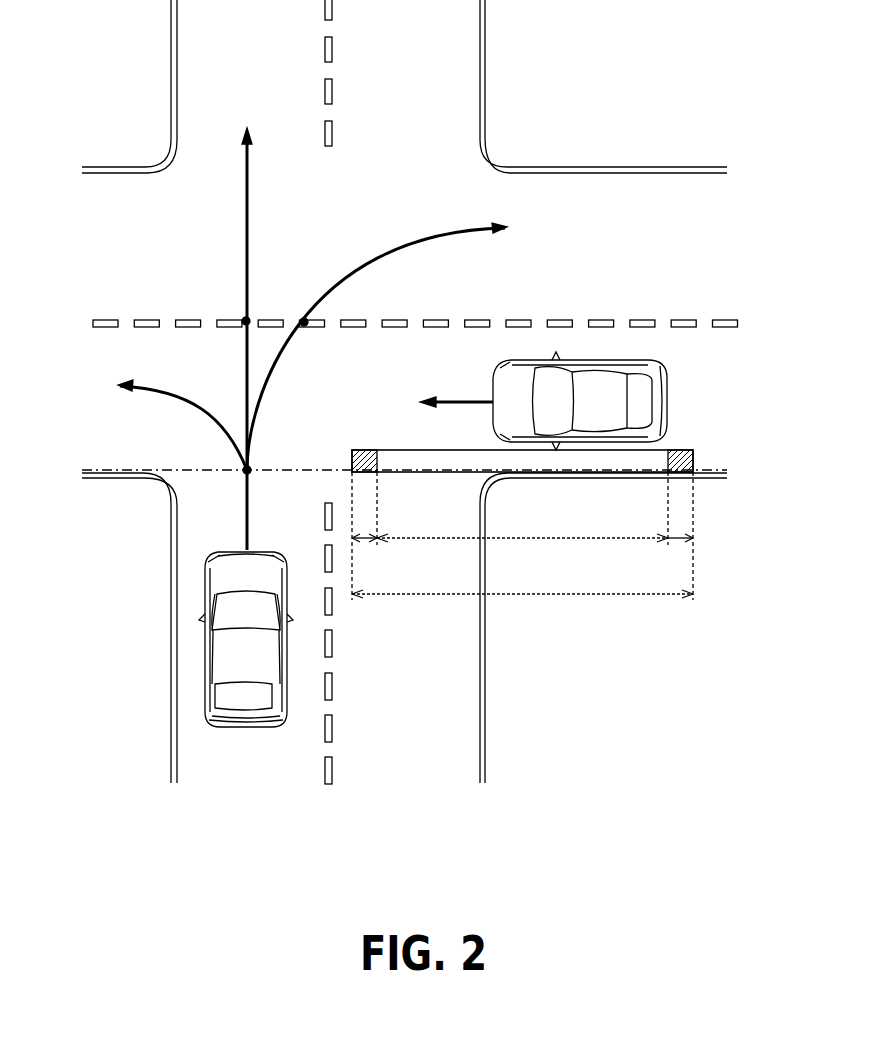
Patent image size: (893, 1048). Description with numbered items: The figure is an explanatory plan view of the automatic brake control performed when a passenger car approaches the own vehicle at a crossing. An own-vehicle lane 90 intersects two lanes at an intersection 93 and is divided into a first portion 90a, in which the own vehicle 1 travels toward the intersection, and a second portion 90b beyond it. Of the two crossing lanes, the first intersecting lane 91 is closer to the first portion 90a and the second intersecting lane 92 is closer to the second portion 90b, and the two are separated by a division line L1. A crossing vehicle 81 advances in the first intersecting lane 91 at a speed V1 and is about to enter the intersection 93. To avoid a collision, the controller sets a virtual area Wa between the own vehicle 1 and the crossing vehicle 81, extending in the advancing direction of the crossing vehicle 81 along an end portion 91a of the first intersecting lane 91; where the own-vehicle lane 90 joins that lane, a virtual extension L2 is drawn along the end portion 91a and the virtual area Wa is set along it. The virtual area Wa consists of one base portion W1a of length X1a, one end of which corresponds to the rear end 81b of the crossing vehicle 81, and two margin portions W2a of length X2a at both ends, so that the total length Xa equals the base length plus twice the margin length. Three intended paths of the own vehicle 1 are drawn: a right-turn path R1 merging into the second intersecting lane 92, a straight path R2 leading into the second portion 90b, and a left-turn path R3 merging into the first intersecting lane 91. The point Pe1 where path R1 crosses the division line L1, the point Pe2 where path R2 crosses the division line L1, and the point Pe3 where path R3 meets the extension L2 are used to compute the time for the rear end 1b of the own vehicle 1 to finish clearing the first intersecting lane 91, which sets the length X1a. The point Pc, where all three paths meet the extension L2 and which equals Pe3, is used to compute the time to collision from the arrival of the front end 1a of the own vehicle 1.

The own vehicle 1 is at (196, 633).
The front end of own vehicle 1a is at (237, 552).
The rear end of own vehicle 1b is at (242, 729).
The crossing vehicle 81 is at (656, 353).
The rear end of crossing vehicle 81b is at (674, 401).
The own-vehicle lane 90 is at (245, 757).
The first portion of own-vehicle lane 90a is at (195, 753).
The second portion of own-vehicle lane 90b is at (212, 49).
The first intersecting lane 91 is at (105, 407).
The end portion of first intersecting lane 91a is at (710, 479).
The second intersecting lane 92 is at (105, 232).
The intersection 93 is at (203, 195).
The division line L1 is at (106, 318).
The virtual extension L2 is at (191, 470).
The intended path for right turn R1 is at (440, 226).
The intended path for traveling straight R2 is at (252, 156).
The intended path for left turn R3 is at (170, 385).
The point Pe1 is at (301, 318).
The point Pe2 is at (243, 318).
The point Pe3 is at (247, 470).
The point Pc is at (252, 466).
The speed of crossing vehicle V1 is at (456, 391).
The base portion W1a is at (462, 448).
The margin portion W2a is at (350, 458).
The virtual area Wa is at (417, 476).
The length of base portion X1a is at (522, 529).
The length of margin portion X2a is at (365, 545).
The length of virtual area Xa is at (522, 584).